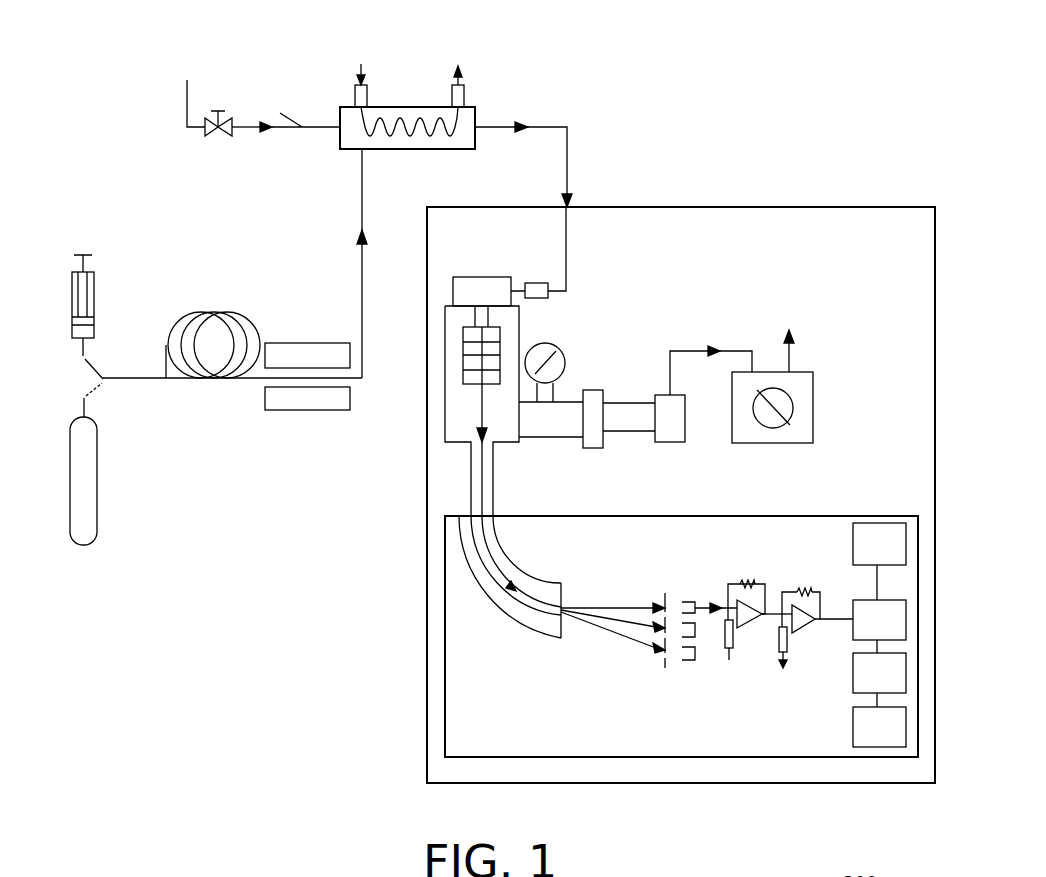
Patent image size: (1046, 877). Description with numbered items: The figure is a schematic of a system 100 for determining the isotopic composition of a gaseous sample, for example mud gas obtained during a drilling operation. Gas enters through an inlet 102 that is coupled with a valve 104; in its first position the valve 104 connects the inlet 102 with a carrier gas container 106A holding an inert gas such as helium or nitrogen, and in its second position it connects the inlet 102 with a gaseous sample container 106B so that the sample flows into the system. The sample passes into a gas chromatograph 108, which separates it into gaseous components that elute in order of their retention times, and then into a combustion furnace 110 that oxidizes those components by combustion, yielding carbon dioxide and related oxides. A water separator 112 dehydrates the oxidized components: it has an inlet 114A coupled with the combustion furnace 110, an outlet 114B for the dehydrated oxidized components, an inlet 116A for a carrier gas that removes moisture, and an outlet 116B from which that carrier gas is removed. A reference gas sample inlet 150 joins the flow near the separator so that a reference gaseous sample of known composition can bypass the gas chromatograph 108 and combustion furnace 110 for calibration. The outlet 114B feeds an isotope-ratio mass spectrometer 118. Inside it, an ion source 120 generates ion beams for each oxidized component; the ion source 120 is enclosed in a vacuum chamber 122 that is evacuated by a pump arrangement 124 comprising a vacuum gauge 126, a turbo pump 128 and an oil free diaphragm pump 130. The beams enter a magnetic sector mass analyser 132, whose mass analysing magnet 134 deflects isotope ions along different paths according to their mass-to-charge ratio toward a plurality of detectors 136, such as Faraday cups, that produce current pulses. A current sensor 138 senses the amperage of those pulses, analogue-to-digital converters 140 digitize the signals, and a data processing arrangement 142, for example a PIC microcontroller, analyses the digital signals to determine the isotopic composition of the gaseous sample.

The system 100 is at (860, 90).
The inlet 102 is at (103, 378).
The valve 104 is at (96, 402).
The carrier gas container 106A is at (83, 545).
The gaseous sample container 106B is at (93, 255).
The gas chromatograph 108 is at (210, 378).
The combustion furnace 110 is at (305, 343).
The water separator 112 is at (410, 150).
The inlet 114A is at (338, 126).
The outlet 114B is at (480, 124).
The inlet 116A is at (357, 85).
The outlet 116B is at (463, 84).
The isotope-ratio mass spectrometer 118 is at (700, 245).
The ion source 120 is at (457, 387).
The vacuum chamber 122 is at (520, 318).
The pump arrangement 124 is at (716, 314).
The vacuum gauge 126 is at (547, 405).
The turbo pump 128 is at (605, 446).
The oil free diaphragm pump 130 is at (802, 372).
The magnetic sector mass analyser 132 is at (700, 551).
The mass analysing magnet 134 is at (483, 600).
The detectors 136 is at (662, 670).
The current sensor 138 is at (770, 620).
The analogue-to-digital converters 140 is at (898, 636).
The data processing arrangement 142 is at (898, 560).
The reference gas sample inlet 150 is at (302, 127).